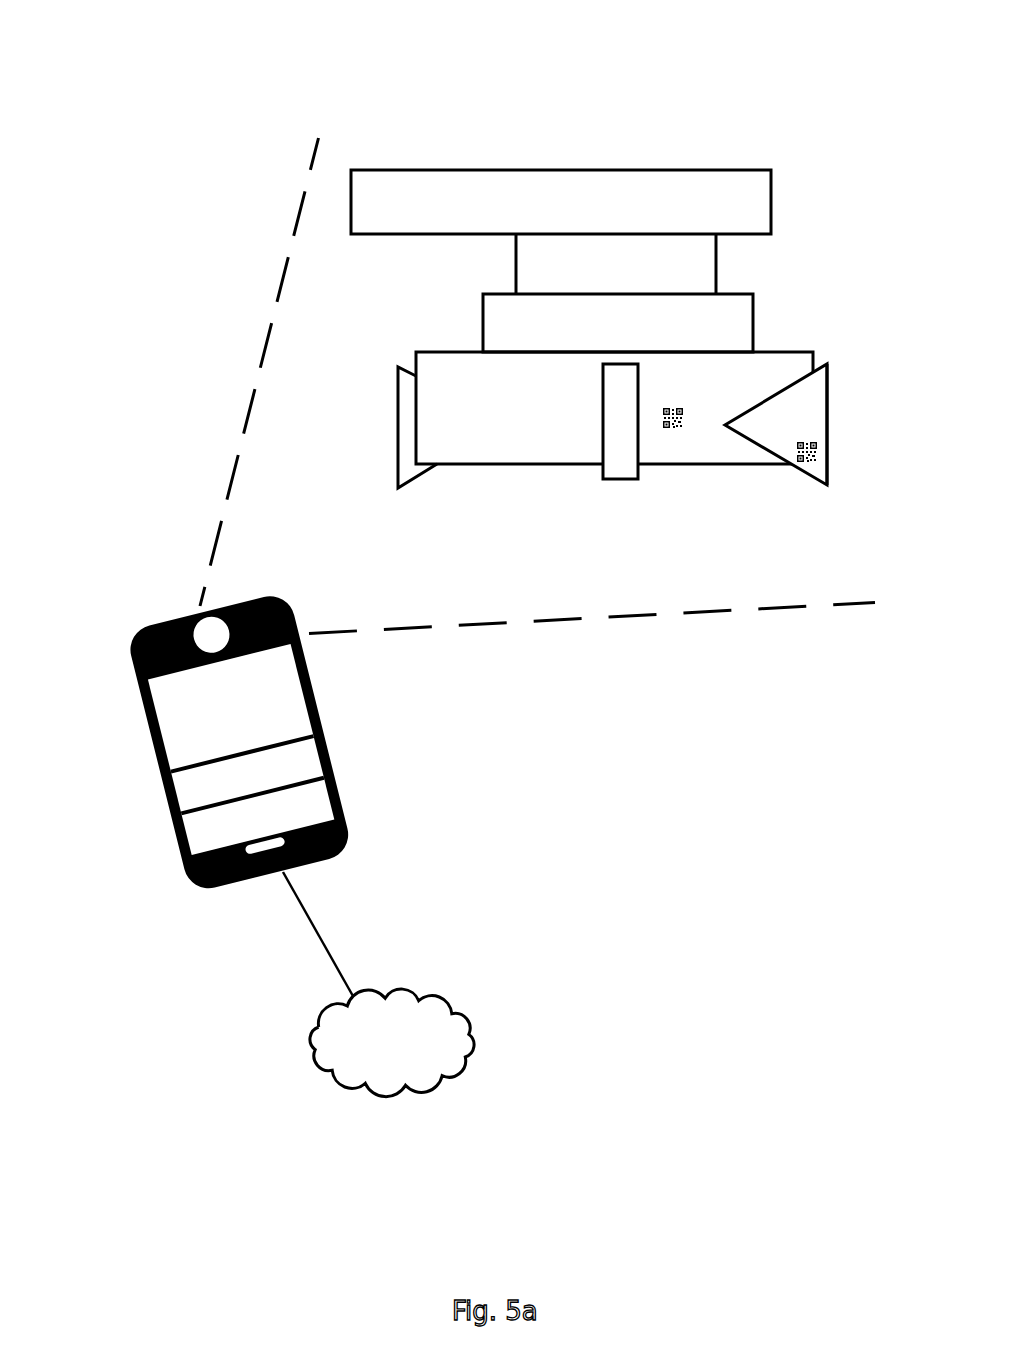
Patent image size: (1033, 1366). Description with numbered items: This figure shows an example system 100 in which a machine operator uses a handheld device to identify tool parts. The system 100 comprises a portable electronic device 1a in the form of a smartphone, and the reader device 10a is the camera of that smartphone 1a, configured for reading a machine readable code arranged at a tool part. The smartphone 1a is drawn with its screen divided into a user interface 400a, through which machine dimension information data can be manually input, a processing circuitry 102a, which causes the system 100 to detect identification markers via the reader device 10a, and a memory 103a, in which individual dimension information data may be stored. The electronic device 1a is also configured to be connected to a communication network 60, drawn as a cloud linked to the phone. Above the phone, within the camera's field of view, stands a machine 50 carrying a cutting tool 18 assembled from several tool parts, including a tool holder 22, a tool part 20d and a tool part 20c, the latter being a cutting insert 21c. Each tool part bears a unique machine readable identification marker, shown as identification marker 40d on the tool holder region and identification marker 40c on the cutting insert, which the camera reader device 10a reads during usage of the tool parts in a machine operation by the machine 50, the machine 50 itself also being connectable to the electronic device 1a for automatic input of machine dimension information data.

The system 100 is at (87, 63).
The portable electronic device 1a is at (162, 862).
The reader device 10a is at (191, 593).
The user interface 400a is at (241, 749).
The processing circuitry 102a is at (247, 771).
The memory 103a is at (257, 813).
The machine 50 is at (429, 262).
The cutting tool 18 is at (798, 300).
The tool holder 22 is at (762, 476).
The tool part 20d is at (700, 446).
The tool part 20c is at (806, 391).
The cutting insert 21c is at (849, 423).
The identification marker 40c is at (830, 461).
The identification marker 40d is at (668, 441).
The communication network 60 is at (378, 984).